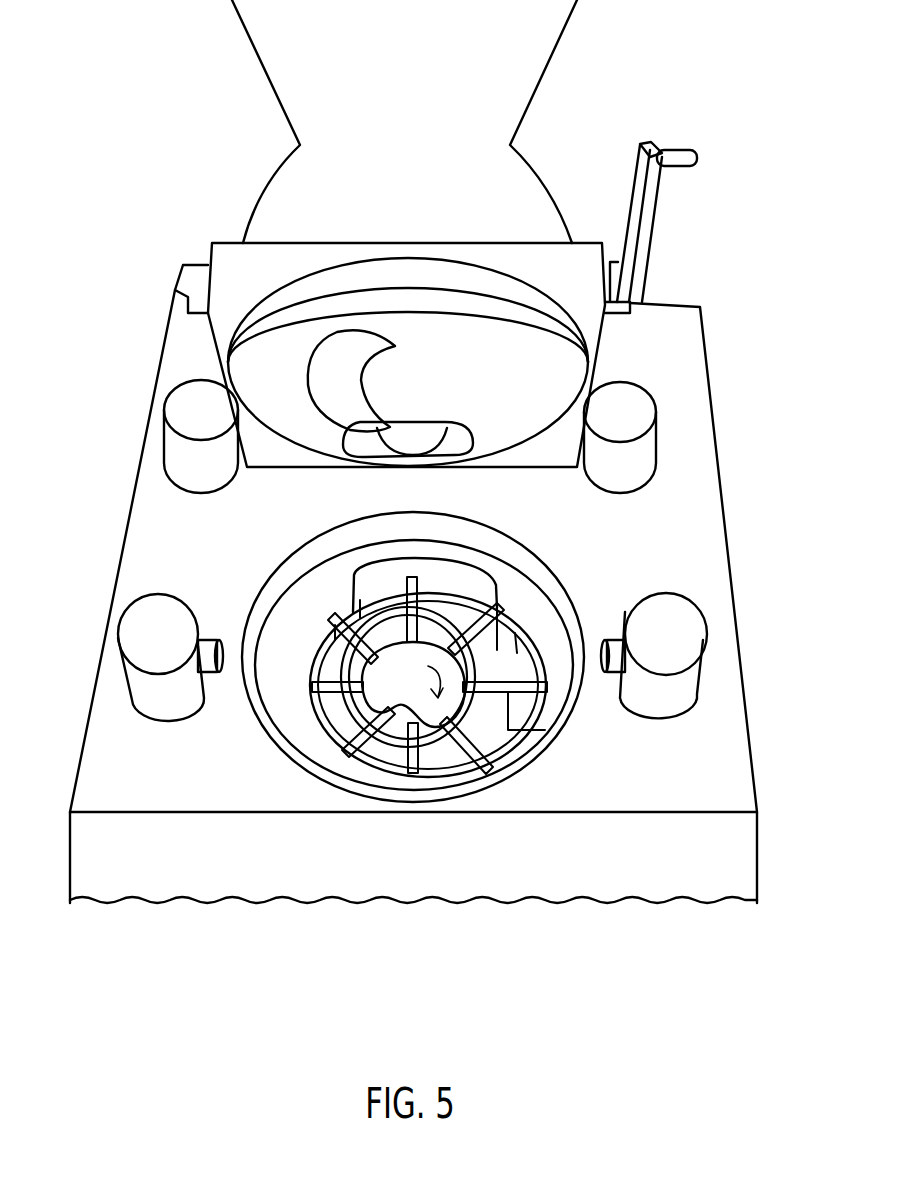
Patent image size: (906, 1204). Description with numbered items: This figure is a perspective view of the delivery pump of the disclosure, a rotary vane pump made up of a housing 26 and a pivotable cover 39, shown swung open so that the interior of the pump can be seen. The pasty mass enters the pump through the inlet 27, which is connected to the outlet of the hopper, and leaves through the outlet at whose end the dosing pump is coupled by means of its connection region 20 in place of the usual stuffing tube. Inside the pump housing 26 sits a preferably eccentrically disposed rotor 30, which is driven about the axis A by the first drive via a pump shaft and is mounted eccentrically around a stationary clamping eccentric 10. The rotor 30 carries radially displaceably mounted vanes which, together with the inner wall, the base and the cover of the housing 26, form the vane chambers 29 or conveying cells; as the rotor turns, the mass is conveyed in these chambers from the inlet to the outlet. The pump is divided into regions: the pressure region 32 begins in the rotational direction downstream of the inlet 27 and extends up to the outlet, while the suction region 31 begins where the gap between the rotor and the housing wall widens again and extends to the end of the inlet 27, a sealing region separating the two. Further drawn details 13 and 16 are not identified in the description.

The clamping eccentric 10 is at (375, 694).
The rotor blades 13 is at (517, 648).
The inner ring 16 is at (410, 750).
The connection region 20 is at (357, 746).
The housing 26 is at (297, 628).
The inlet 27 is at (463, 585).
The vane chambers 29 is at (548, 716).
The rotor 30 is at (485, 725).
The suction region 31 is at (347, 752).
The pressure region 32 is at (510, 673).
The pivotable cover 39 is at (537, 363).